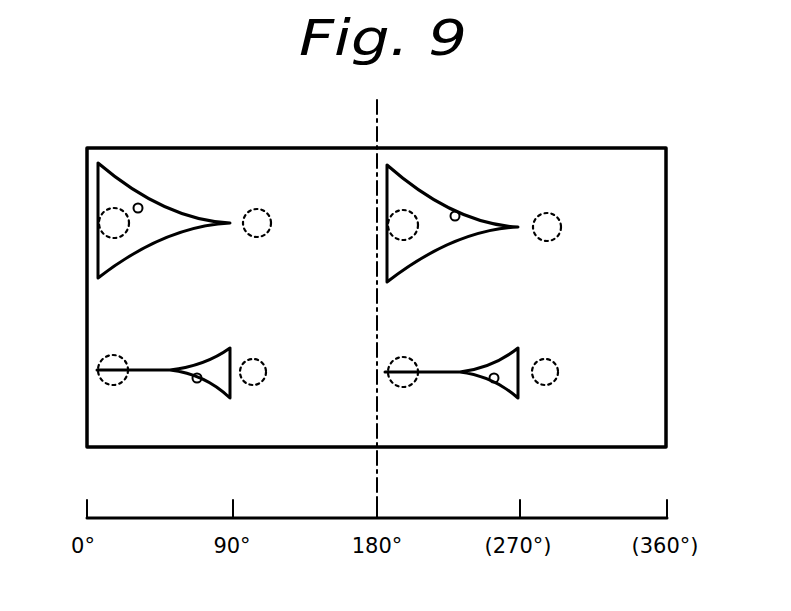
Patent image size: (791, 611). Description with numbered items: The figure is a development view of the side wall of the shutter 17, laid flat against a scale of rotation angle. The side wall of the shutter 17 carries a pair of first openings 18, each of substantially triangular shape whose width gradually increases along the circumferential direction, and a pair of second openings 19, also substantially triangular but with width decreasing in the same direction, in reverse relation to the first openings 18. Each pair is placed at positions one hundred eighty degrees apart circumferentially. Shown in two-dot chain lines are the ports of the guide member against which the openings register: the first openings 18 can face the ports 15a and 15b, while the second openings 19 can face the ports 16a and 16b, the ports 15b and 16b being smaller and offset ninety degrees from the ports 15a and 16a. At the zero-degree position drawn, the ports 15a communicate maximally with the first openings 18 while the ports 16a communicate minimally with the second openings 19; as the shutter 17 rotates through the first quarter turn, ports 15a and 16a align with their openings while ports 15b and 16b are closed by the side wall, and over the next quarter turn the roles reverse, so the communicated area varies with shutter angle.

The ports 15a is at (100, 215).
The ports 15b is at (262, 212).
The ports 16a is at (110, 386).
The ports 16b is at (263, 384).
The shutter 17 is at (637, 170).
The first openings 18 is at (141, 204).
The second openings 19 is at (195, 383).